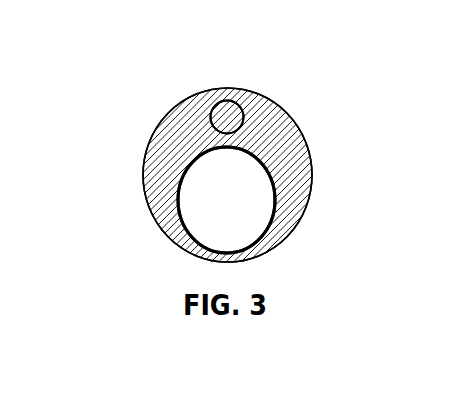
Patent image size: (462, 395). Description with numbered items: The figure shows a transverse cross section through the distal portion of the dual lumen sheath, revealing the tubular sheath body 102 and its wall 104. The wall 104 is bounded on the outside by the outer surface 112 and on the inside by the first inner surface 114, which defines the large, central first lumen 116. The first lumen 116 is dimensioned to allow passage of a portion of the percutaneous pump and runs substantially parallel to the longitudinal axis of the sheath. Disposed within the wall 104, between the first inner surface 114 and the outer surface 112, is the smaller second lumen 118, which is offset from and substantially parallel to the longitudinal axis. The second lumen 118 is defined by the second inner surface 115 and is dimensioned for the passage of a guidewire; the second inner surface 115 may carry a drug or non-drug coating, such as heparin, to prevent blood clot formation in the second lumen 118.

The tubular sheath body 102 is at (192, 61).
The wall 104 is at (286, 146).
The outer surface 112 is at (180, 102).
The first inner surface 114 is at (257, 227).
The second inner surface 115 is at (218, 121).
The first lumen 116 is at (196, 222).
The second lumen 118 is at (233, 107).